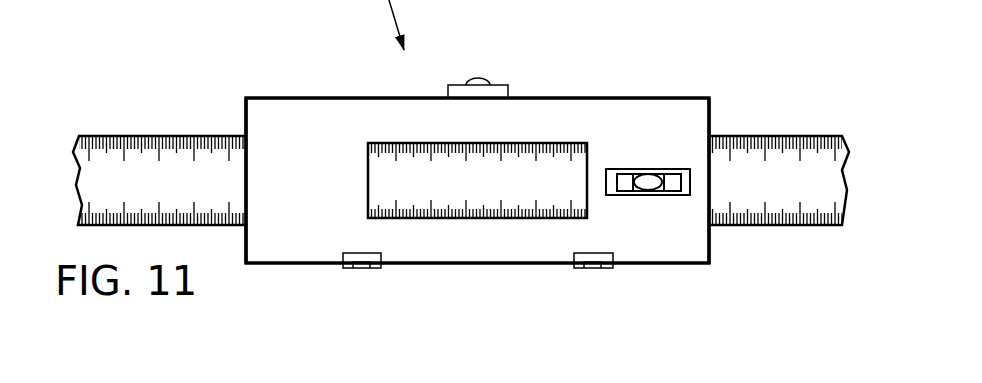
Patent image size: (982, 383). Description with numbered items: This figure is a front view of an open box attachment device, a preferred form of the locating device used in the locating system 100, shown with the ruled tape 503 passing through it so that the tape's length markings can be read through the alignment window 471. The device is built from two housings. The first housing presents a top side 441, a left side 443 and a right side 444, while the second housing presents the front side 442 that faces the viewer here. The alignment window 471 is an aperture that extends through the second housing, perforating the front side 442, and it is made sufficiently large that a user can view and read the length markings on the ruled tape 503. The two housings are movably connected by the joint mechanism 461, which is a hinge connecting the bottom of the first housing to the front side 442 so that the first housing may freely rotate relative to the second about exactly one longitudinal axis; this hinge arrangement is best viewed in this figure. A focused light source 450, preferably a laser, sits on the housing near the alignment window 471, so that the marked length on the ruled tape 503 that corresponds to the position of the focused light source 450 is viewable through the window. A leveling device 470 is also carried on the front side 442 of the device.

The locating system 100 is at (312, 312).
The ruled tape 503 is at (167, 137).
The top side 441 is at (566, 90).
The front side 442 is at (287, 216).
The left side 443 is at (236, 117).
The right side 444 is at (720, 111).
The focused light source 450 is at (480, 79).
The joint mechanism 461 is at (355, 267).
The leveling device 470 is at (648, 195).
The alignment window 471 is at (405, 136).